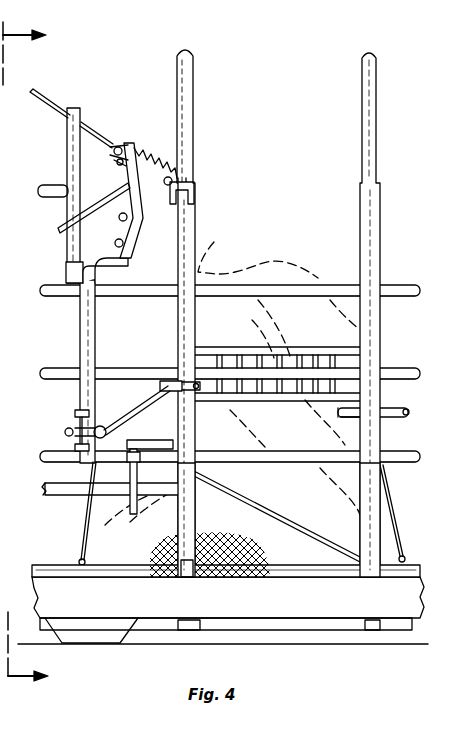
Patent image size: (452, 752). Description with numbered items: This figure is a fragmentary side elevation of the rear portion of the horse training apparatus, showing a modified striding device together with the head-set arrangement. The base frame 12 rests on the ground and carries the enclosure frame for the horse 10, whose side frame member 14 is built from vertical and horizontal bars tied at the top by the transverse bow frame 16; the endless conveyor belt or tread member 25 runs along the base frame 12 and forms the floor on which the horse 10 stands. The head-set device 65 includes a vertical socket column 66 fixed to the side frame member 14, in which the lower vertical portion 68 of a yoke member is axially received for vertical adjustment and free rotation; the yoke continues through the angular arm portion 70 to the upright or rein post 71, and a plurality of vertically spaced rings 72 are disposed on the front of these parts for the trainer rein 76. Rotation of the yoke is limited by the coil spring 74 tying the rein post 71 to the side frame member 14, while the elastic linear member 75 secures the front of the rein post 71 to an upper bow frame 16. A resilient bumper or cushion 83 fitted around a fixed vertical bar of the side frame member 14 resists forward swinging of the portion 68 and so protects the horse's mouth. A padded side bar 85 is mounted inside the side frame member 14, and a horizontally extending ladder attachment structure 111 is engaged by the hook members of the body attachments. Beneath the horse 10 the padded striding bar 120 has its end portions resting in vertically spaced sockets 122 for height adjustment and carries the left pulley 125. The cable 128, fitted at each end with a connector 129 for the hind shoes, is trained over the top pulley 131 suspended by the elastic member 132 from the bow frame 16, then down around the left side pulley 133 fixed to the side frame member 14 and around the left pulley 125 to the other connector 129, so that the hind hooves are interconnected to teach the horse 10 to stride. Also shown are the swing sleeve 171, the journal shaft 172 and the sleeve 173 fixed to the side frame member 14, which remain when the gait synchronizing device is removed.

The horse 10 is at (220, 262).
The base frame 12 is at (275, 602).
The side frame member 14 is at (362, 228).
The transverse bow frame 16 is at (182, 313).
The endless conveyor belt or tread member 25 is at (324, 568).
The head-set device 65 is at (118, 255).
The socket column 66 is at (80, 330).
The lower vertical portion 68 is at (68, 265).
The angular arm portion 70 is at (136, 240).
The upright or rein post 71 is at (142, 154).
The ring 72 is at (124, 162).
The coil spring 74 is at (160, 152).
The elastic linear member 75 is at (44, 96).
The trainer rein 76 is at (82, 204).
The resilient bumper or cushion 83 is at (66, 276).
The padded side bar 85 is at (390, 418).
The ladder attachment structure 111 is at (212, 350).
The padded striding bar 120 is at (66, 432).
The socket 122 is at (72, 414).
The left pulley 125 is at (120, 432).
The cable 128 is at (176, 321).
The connector 129 is at (78, 552).
The top pulley 131 is at (193, 196).
The elastic member 132 is at (178, 95).
The left side pulley 133 is at (165, 382).
The sleeve 171 is at (175, 444).
The journal shaft 172 is at (140, 512).
The sleeve 173 is at (196, 482).